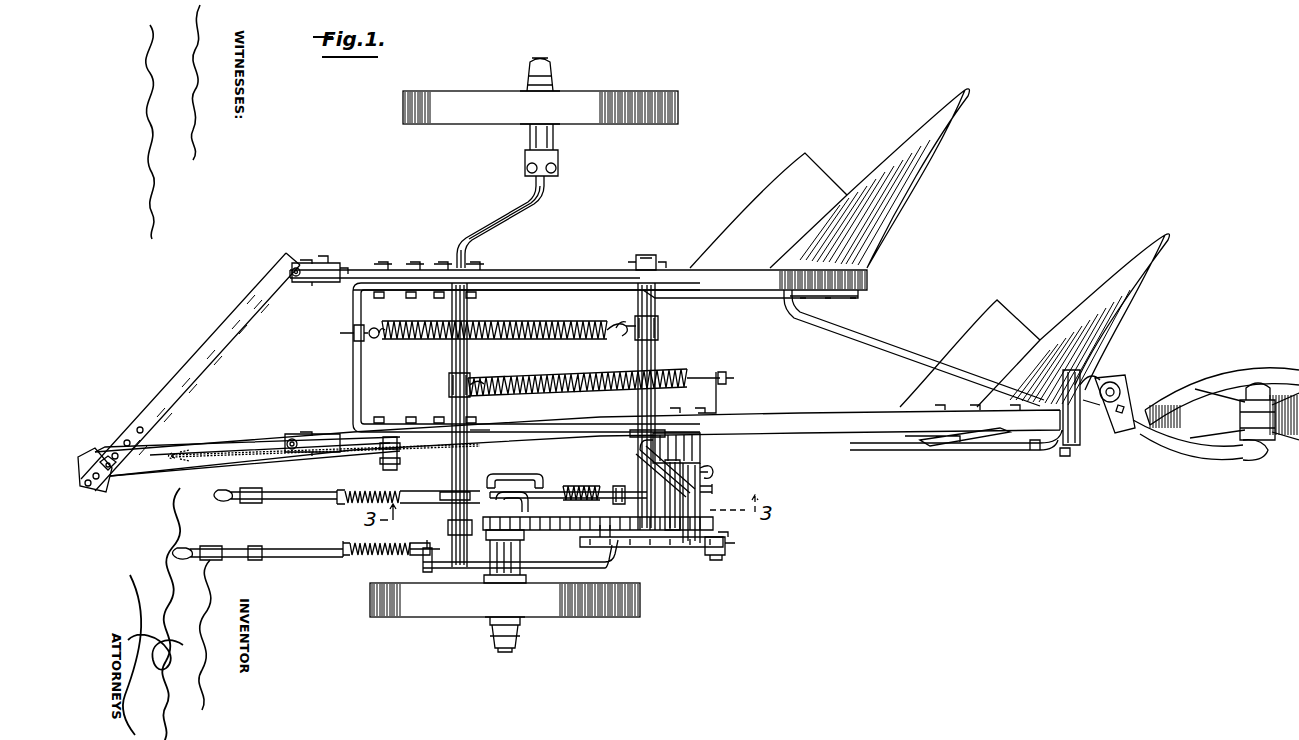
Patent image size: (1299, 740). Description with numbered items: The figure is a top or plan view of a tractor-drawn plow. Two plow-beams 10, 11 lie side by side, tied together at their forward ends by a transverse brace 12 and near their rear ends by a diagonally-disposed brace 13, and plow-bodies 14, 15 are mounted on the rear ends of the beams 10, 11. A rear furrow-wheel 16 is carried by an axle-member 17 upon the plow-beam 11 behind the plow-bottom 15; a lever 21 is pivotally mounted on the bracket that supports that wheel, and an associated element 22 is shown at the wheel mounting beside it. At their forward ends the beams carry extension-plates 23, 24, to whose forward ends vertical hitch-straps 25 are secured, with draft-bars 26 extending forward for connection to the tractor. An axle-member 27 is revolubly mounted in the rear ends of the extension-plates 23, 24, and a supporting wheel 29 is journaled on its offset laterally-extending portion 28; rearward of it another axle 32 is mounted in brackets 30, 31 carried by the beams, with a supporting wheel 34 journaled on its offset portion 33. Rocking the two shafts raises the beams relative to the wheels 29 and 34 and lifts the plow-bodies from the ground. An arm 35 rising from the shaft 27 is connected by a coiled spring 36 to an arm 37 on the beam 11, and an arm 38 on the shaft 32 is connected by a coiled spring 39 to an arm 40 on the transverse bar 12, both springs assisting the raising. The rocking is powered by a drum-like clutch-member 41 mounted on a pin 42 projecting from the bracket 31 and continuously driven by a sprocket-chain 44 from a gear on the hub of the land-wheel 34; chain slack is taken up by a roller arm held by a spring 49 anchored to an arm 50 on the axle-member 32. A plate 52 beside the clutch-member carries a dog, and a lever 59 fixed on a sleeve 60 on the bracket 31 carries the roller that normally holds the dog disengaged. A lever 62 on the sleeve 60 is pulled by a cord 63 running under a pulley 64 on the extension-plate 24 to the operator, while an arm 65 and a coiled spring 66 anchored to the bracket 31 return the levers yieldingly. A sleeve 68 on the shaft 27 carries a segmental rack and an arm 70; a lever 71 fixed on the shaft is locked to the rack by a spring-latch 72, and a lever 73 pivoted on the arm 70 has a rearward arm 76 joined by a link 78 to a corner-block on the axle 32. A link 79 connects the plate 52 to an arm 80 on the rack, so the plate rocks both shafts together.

The plow-beam 10 is at (695, 280).
The plow-beam 11 is at (773, 420).
The transverse brace 12 is at (356, 356).
The diagonally-disposed brace 13 is at (832, 334).
The plow-body 14 is at (818, 188).
The plow-body 15 is at (1007, 325).
The rear furrow-wheel 16 is at (1215, 380).
The axle-member 17 is at (1205, 440).
The lever 21 is at (992, 448).
The pivot hinge 22 is at (1110, 420).
The extension-plate 23 is at (345, 270).
The extension-plate 24 is at (345, 440).
The vertical hitch-straps 25 is at (315, 266).
The draft-bars 26 is at (232, 440).
The axle-member 27 is at (468, 305).
The offset laterally-extending portion 28 is at (548, 180).
The supporting wheel 29 is at (480, 100).
The bracket 30 is at (632, 262).
The bracket 31 is at (672, 450).
The axle 32 is at (656, 352).
The offset laterally-extending portion 33 is at (507, 508).
The supporting wheel 34 is at (462, 612).
The arm 35 is at (447, 390).
The coiled spring 36 is at (577, 374).
The arm 37 is at (722, 393).
The arm 38 is at (660, 323).
The coiled spring 39 is at (550, 324).
The arm 40 is at (348, 331).
The drum-like clutch-member 41 is at (670, 543).
The pin 42 is at (637, 507).
The sprocket-chain 44 is at (607, 530).
The spring 49 is at (580, 488).
The arm 50 is at (618, 486).
The plate 52 is at (642, 548).
The lever 59 is at (735, 545).
The sleeve 60 is at (698, 497).
The lever 62 is at (640, 430).
The cord or cable 63 is at (207, 458).
The pulley 64 is at (396, 470).
The arm 65 is at (700, 490).
The coiled spring 66 is at (706, 472).
The sleeve 68 is at (456, 527).
The arm 70 is at (460, 492).
The lever 71 is at (330, 560).
The spring-latch 72 is at (345, 542).
The lever 73 is at (318, 493).
The arm 76 is at (488, 440).
The link 78 is at (518, 488).
The link 79 is at (553, 570).
The arm 80 is at (423, 562).